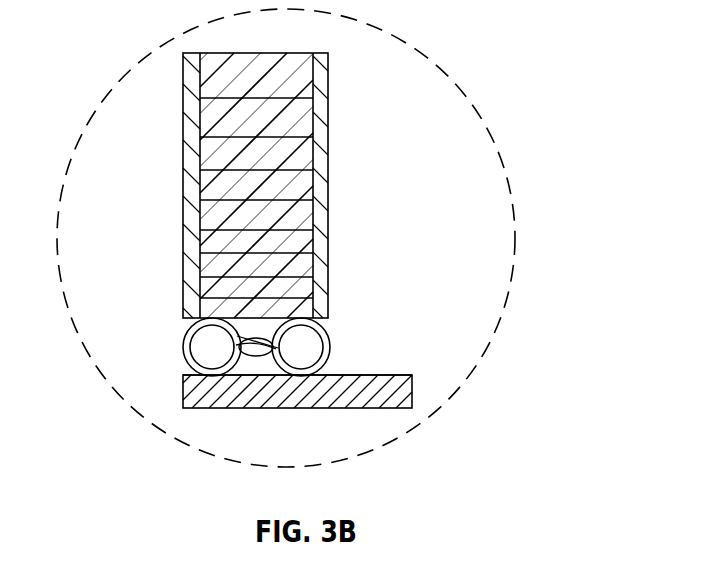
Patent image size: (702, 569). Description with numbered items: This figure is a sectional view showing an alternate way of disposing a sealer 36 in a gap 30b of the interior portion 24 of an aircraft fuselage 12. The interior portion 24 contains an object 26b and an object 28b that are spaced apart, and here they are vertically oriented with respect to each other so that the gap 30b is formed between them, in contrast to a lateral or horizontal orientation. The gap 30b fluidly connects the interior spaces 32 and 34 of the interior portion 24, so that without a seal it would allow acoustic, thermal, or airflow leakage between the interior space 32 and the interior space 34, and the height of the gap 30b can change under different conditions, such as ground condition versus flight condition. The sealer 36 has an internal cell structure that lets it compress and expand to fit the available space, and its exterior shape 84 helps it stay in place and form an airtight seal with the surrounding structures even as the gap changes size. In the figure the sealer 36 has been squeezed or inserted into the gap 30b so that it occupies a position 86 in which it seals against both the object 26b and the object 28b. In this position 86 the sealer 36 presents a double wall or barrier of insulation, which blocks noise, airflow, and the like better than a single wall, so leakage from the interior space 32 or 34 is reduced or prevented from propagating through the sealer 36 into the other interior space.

The fuselage 12 is at (315, 238).
The interior portion 24 is at (315, 238).
The interior space 34 is at (500, 232).
The object 26b is at (213, 187).
The gap 30b is at (276, 382).
The interior space 32 is at (188, 337).
The position 86 is at (192, 370).
The exterior shape 84 is at (227, 365).
The sealer 36 is at (335, 372).
The object 28b is at (339, 394).